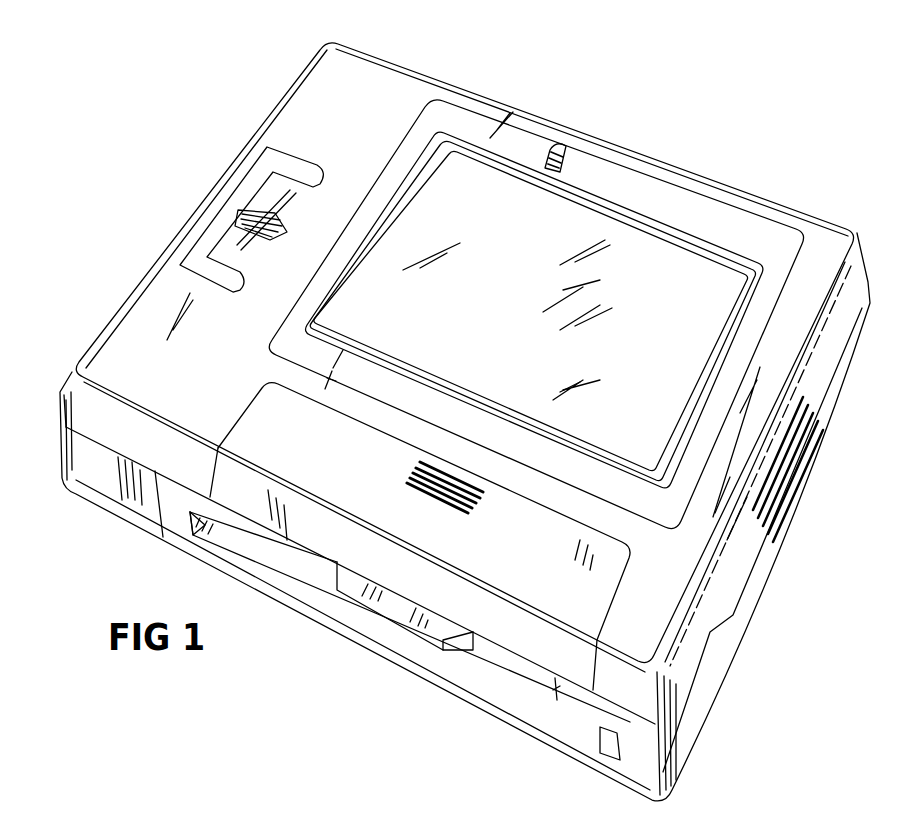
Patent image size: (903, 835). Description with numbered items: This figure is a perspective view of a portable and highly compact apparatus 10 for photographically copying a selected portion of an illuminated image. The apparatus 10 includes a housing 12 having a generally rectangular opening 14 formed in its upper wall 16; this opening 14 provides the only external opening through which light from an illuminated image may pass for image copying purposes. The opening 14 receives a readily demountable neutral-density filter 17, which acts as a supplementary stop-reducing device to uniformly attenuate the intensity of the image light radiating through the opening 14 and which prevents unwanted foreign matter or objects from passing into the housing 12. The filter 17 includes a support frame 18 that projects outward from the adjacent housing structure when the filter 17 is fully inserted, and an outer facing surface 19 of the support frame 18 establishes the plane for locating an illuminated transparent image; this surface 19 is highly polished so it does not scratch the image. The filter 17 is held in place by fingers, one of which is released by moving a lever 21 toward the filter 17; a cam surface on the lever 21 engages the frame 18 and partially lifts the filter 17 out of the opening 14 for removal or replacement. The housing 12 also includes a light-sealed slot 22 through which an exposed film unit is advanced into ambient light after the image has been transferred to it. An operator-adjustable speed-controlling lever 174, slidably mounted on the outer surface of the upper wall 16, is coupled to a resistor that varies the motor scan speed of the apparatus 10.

The apparatus 10 is at (862, 184).
The housing 12 is at (366, 54).
The opening 14 is at (728, 345).
The upper wall 16 is at (404, 85).
The neutral-density filter 17 is at (513, 187).
The support frame 18 is at (712, 237).
The outer facing surface 19 is at (650, 218).
The lever 21 is at (568, 142).
The light-sealed slot 22 is at (500, 680).
The speed-controlling lever 174 is at (240, 212).